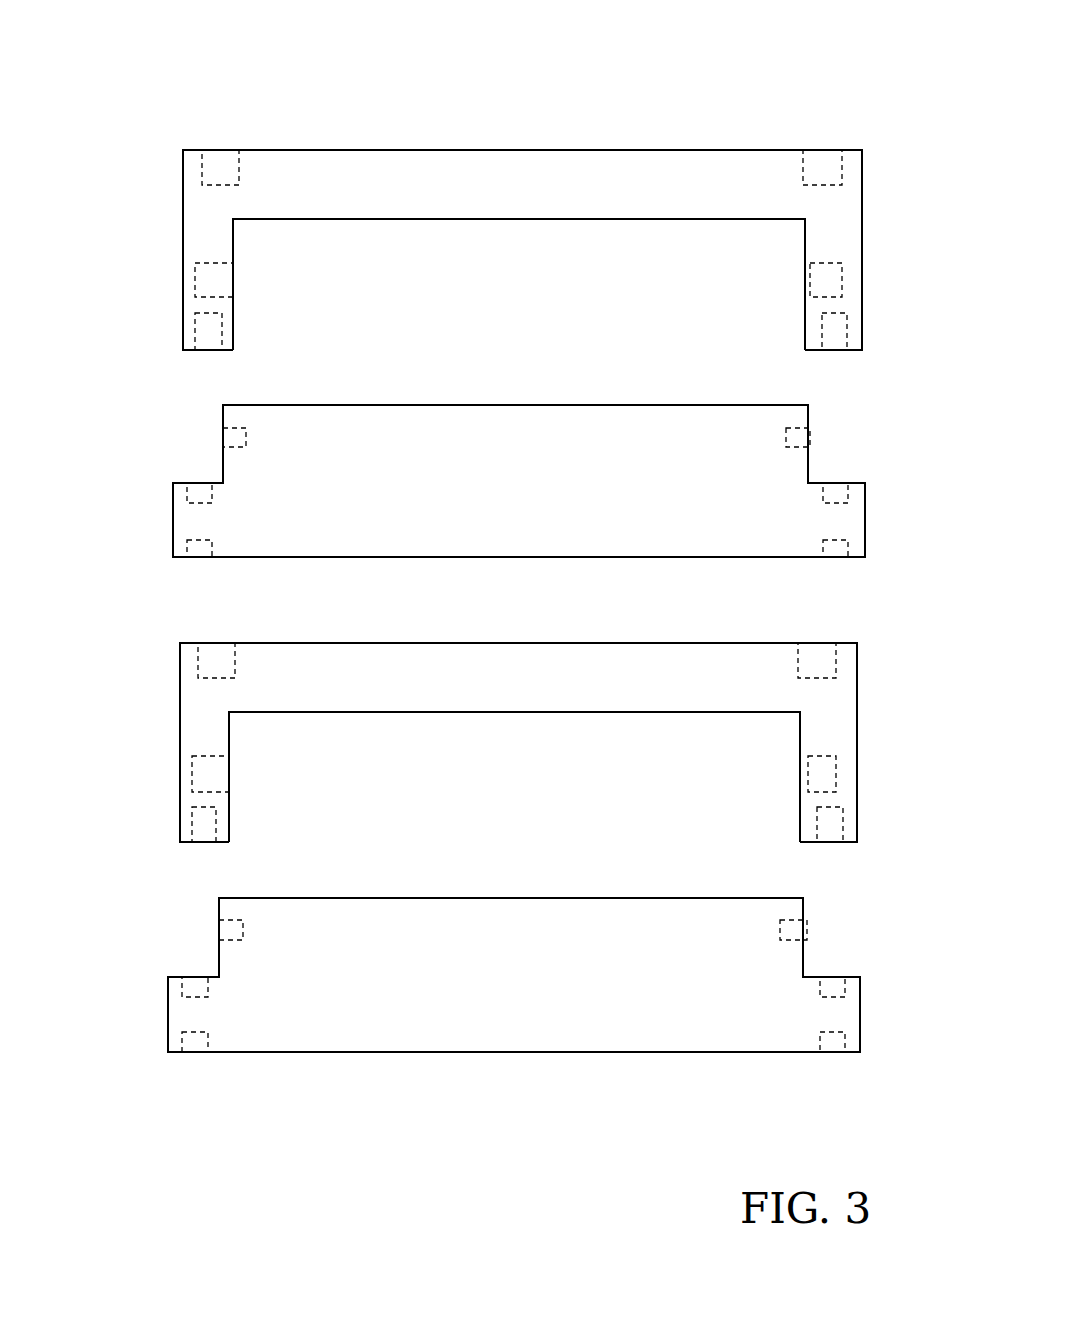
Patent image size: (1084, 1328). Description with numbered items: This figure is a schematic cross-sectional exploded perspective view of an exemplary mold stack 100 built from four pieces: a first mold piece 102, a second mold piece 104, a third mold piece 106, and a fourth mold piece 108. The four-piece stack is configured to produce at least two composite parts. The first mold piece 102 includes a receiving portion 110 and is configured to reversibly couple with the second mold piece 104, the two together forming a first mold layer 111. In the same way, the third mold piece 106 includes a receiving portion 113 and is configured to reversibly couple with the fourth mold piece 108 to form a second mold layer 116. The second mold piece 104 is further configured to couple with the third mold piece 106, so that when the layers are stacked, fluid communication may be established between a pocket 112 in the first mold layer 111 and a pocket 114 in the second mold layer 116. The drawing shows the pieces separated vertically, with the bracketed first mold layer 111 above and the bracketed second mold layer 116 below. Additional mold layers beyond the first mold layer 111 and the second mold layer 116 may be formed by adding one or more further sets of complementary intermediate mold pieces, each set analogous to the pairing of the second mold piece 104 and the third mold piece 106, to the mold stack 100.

The mold stack 100 is at (880, 108).
The first mold piece 102 is at (862, 242).
The second mold piece 104 is at (865, 518).
The third mold piece 106 is at (858, 727).
The fourth mold piece 108 is at (860, 1007).
The receiving portion 110 is at (502, 219).
The first mold layer 111 is at (133, 150).
The pocket 112 is at (701, 348).
The receiving portion 113 is at (538, 712).
The pocket 114 is at (716, 833).
The second mold layer 116 is at (137, 643).